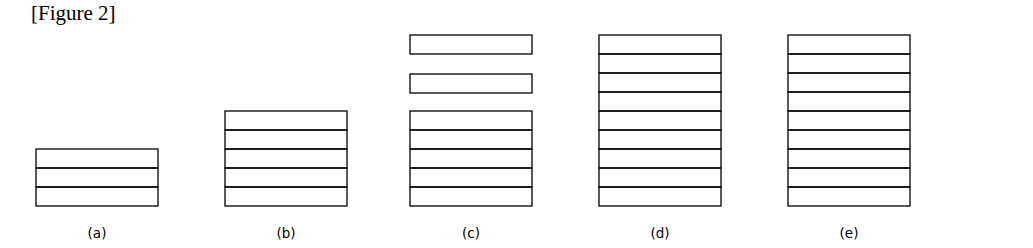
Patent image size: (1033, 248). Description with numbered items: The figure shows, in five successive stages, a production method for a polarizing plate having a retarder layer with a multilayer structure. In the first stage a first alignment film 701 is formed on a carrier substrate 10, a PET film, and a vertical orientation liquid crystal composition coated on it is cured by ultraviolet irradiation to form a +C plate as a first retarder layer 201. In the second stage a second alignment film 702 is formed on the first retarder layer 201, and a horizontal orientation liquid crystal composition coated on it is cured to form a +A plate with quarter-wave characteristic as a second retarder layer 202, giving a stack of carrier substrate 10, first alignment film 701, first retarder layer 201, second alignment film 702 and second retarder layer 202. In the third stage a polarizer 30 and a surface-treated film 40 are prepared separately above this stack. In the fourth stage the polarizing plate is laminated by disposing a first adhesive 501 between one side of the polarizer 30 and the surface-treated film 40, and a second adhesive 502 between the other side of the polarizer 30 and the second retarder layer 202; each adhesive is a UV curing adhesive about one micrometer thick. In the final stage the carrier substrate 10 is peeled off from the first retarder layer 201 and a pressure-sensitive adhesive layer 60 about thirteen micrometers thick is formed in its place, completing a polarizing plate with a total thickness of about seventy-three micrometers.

The carrier substrate 10 is at (160, 198).
The pressure-sensitive adhesive layer 60 is at (912, 198).
The first alignment film 701 is at (160, 178).
The first retarder layer 201 is at (160, 160).
The second alignment film 702 is at (348, 140).
The second retarder layer 202 is at (348, 122).
The polarizer 30 is at (534, 84).
The surface-treated film 40 is at (534, 46).
The first adhesive 501 is at (722, 64).
The second adhesive 502 is at (722, 102).